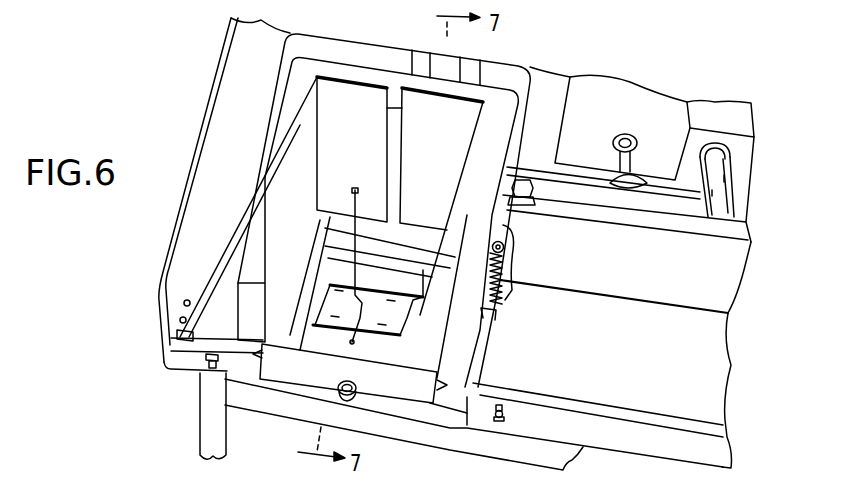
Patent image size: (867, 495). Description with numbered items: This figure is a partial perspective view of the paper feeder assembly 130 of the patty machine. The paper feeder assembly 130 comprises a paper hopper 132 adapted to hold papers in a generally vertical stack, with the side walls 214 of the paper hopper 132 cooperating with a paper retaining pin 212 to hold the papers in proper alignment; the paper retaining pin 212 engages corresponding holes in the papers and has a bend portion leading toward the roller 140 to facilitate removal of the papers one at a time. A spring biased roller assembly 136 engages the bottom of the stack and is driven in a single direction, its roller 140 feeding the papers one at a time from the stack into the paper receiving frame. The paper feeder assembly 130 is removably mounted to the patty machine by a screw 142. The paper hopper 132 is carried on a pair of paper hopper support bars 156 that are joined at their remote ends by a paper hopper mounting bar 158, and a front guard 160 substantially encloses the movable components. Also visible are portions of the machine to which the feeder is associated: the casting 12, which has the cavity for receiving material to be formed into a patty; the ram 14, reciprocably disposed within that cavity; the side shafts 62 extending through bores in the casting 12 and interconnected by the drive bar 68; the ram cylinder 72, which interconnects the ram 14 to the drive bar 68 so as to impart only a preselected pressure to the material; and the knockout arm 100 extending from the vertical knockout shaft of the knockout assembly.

The casting 12 is at (733, 112).
The ram 14 is at (637, 98).
The side shafts 62 is at (720, 180).
The drive bar 68 is at (646, 283).
The ram cylinder 72 is at (637, 154).
The knockout arm 100 is at (169, 434).
The paper feeder assembly 130 is at (274, 393).
The paper hopper 132 is at (452, 124).
The spring biased roller assembly 136 is at (333, 334).
The roller 140 is at (388, 317).
The screw 142 is at (354, 398).
The paper hopper support bars 156 is at (213, 277).
The paper hopper mounting bar 158 is at (602, 437).
The front guard 160 is at (221, 73).
The paper retaining pin 212 is at (356, 189).
The side walls 214 is at (292, 145).